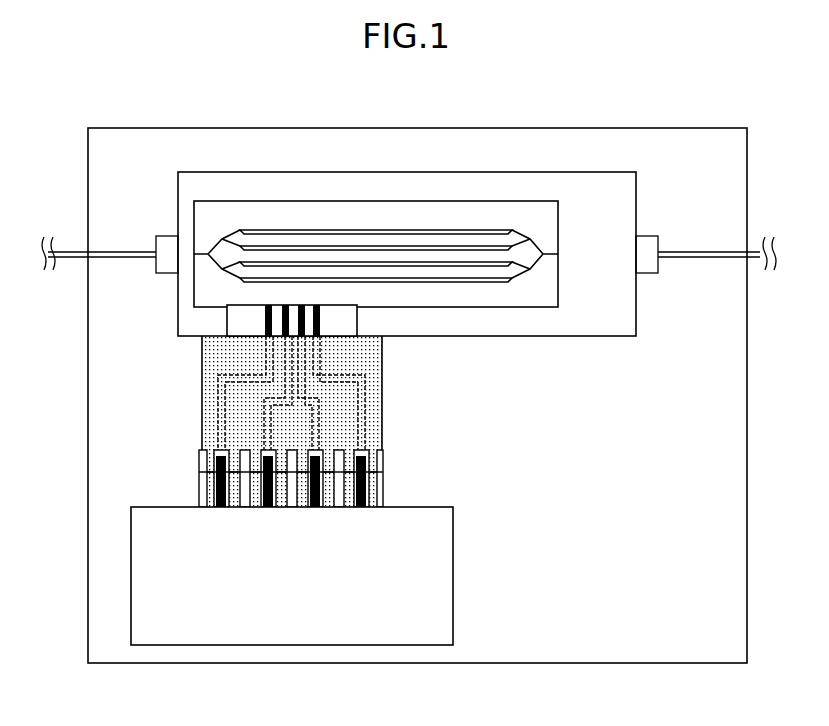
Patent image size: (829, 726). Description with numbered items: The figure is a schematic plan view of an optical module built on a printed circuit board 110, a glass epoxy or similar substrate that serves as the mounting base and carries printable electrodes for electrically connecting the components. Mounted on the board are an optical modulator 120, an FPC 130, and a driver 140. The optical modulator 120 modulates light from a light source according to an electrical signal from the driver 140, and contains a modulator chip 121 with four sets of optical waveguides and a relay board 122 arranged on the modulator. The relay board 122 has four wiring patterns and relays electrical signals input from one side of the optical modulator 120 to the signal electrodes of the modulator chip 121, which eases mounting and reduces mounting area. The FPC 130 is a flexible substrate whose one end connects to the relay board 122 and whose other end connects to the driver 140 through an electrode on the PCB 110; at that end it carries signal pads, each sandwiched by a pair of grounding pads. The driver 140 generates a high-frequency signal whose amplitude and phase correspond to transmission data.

The printed circuit board 110 is at (690, 113).
The optical modulator 120 is at (578, 157).
The modulator chip 121 is at (558, 216).
The relay board 122 is at (357, 323).
The FPC 130 is at (383, 397).
The driver 140 is at (453, 577).